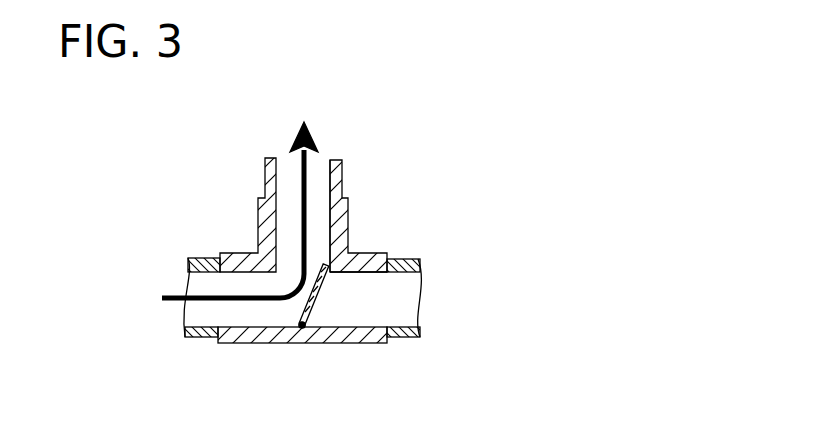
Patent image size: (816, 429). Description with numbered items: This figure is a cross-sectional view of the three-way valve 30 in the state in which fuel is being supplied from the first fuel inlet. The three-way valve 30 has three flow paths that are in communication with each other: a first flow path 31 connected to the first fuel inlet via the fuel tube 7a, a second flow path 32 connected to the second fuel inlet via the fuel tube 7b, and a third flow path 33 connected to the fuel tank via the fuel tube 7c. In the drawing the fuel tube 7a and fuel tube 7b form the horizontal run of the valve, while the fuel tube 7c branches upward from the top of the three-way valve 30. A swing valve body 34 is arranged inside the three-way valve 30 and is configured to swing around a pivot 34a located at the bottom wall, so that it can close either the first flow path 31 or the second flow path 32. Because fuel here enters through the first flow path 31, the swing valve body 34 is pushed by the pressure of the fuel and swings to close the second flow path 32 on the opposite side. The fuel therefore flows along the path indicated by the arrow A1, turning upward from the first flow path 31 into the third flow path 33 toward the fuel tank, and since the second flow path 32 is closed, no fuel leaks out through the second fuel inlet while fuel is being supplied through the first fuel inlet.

The fuel tube 7a is at (198, 338).
The fuel tube 7b is at (408, 257).
The fuel tube 7c is at (344, 175).
The three-way valve 30 is at (294, 196).
The first flow path 31 is at (237, 327).
The second flow path 32 is at (382, 272).
The third flow path 33 is at (330, 207).
The swing valve body 34 is at (323, 295).
The pivot 34a is at (298, 325).
The flow direction A1 is at (293, 135).